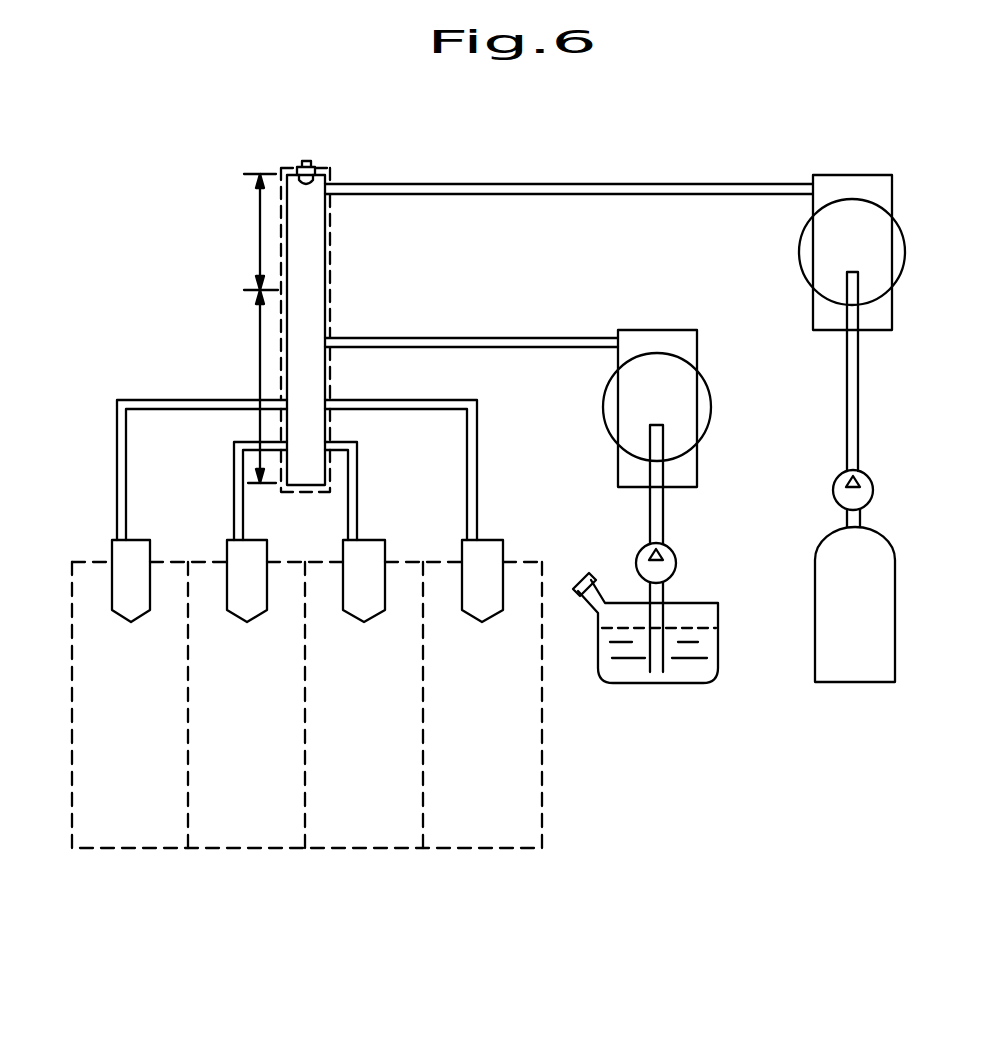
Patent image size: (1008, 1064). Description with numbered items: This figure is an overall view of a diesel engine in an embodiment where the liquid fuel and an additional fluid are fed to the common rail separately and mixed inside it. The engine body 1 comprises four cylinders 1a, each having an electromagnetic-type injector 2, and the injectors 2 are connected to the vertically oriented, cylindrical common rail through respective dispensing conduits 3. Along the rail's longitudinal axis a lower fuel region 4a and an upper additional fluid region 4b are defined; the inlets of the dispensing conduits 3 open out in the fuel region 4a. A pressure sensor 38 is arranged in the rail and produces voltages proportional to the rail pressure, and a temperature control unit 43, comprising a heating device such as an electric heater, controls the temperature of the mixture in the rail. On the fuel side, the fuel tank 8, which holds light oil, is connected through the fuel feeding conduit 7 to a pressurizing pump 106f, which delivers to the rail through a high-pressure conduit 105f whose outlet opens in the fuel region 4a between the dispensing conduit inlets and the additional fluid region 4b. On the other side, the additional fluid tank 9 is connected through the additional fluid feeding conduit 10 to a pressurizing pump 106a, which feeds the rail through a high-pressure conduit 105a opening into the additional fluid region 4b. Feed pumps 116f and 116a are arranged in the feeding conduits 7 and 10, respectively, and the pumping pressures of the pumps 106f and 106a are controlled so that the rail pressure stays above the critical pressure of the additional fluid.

The engine body 1 is at (412, 862).
The cylinder 1a is at (122, 849).
The injector 2 is at (141, 617).
The dispensing conduit 3 is at (233, 468).
The fuel region 4a is at (259, 341).
The additional fluid region 4b is at (259, 238).
The pressure sensor 38 is at (304, 161).
The temperature control unit 43 is at (331, 245).
The high-pressure conduit for the additional fluid 105a is at (523, 195).
The high-pressure conduit for the liquid fuel 105f is at (478, 337).
The pressurizing pump 106a is at (798, 252).
The pressurizing pump 106f is at (712, 406).
The fuel feeding conduit 7 is at (664, 509).
The fuel tank 8 is at (718, 661).
The additional fluid tank 9 is at (815, 591).
The additional fluid feeding conduit 10 is at (858, 396).
The feed pump 116a is at (833, 482).
The feed pump 116f is at (676, 561).